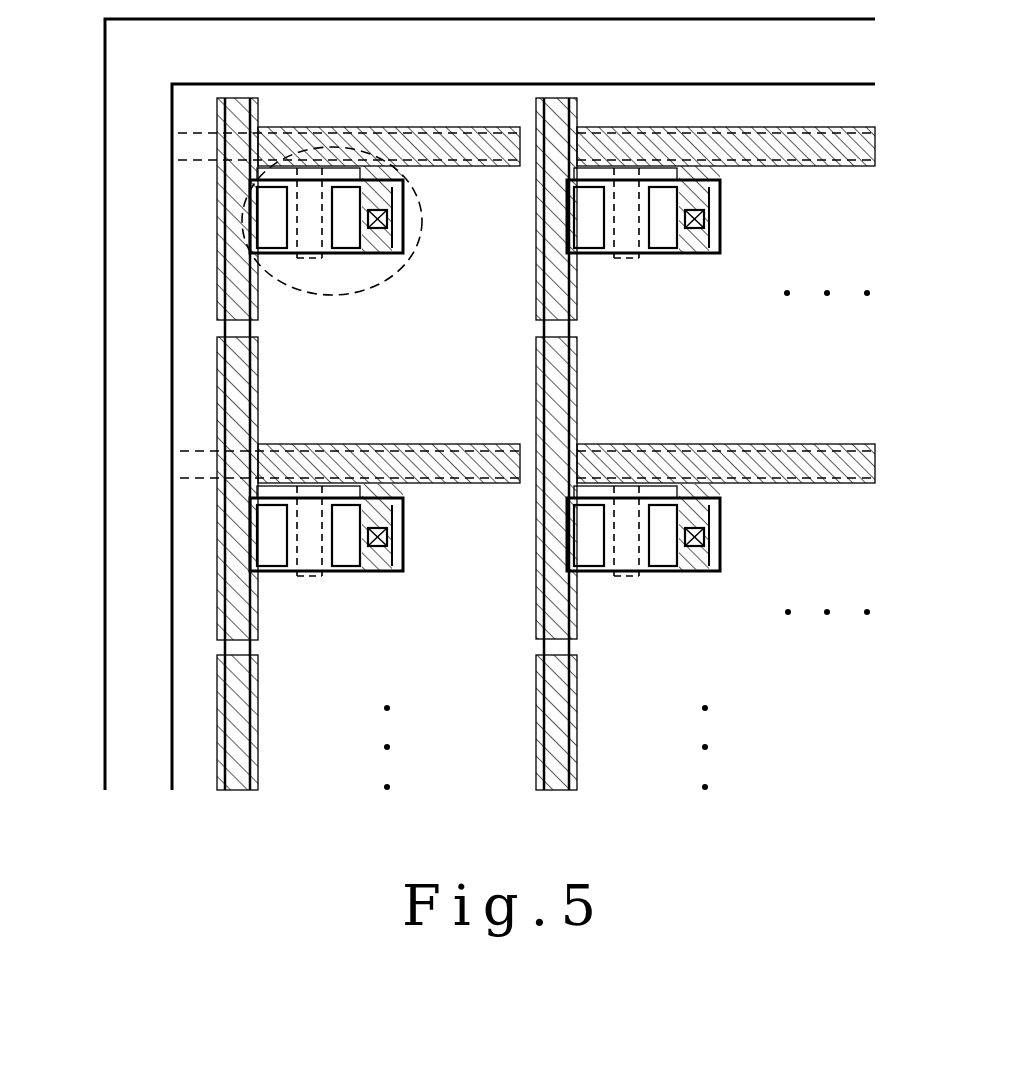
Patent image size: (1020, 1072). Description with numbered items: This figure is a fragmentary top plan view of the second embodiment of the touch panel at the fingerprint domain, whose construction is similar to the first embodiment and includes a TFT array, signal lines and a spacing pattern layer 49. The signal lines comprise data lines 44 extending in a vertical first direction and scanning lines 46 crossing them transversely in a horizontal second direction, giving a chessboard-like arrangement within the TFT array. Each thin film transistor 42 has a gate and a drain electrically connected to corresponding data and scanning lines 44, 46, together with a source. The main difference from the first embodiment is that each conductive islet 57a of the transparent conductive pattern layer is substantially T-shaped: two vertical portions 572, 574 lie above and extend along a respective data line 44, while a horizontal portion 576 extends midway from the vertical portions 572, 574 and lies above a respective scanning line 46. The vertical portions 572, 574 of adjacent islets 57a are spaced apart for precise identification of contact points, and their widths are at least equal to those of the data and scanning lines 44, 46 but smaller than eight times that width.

The spacing pattern layer 49 is at (164, 67).
The scanning line 46 is at (197, 150).
The thin film transistor 42 is at (330, 295).
The conductive islet 57a is at (742, 138).
The vertical portion 572 is at (238, 375).
The horizontal portion 576 is at (400, 463).
The vertical portion 574 is at (238, 610).
The data line 44 is at (233, 648).